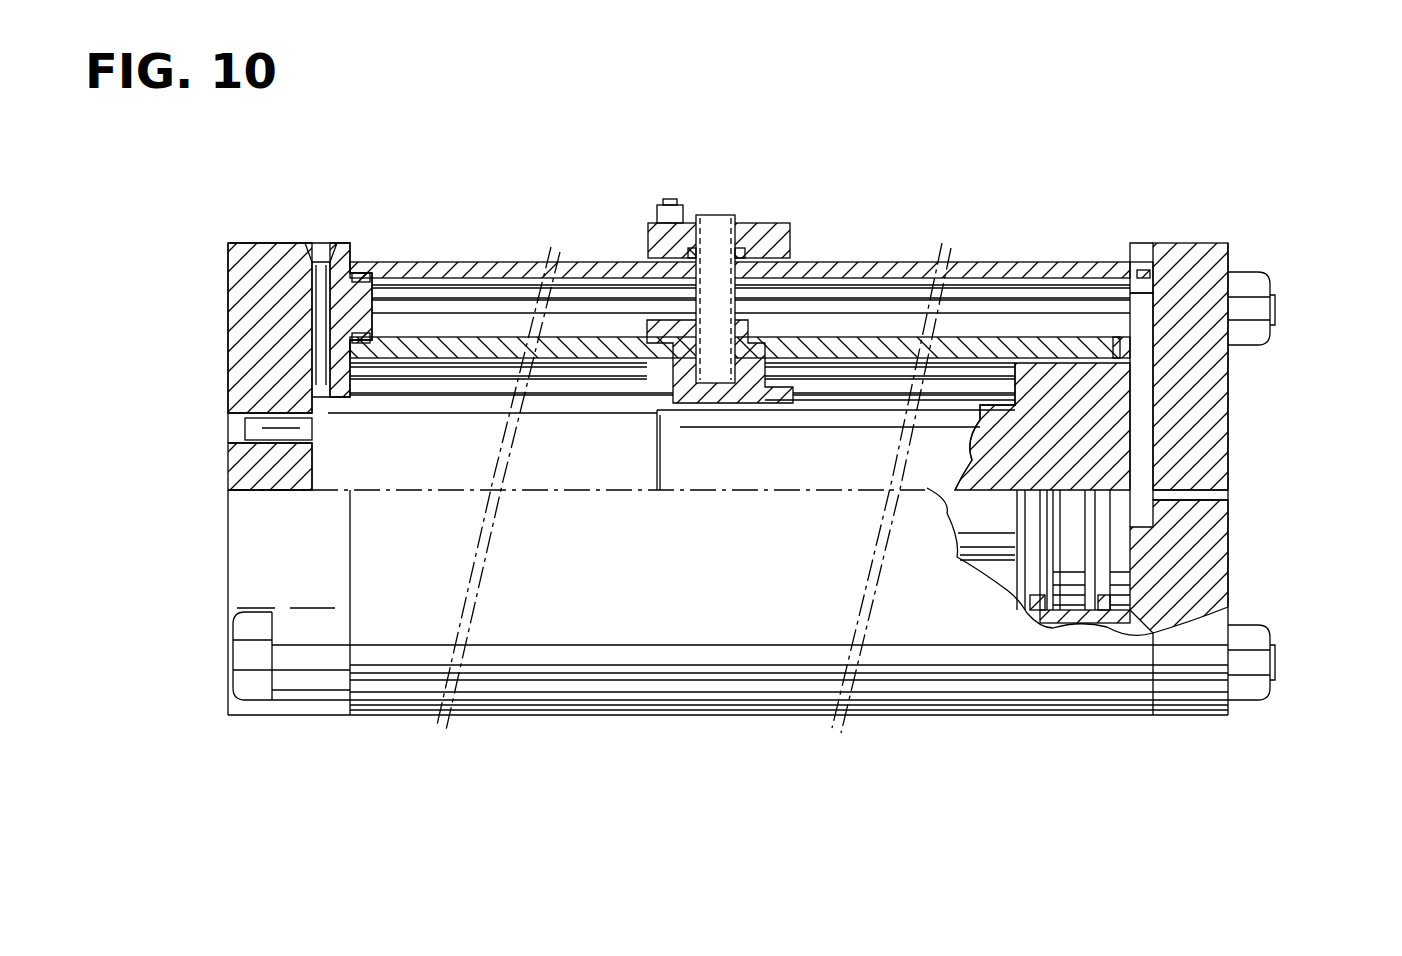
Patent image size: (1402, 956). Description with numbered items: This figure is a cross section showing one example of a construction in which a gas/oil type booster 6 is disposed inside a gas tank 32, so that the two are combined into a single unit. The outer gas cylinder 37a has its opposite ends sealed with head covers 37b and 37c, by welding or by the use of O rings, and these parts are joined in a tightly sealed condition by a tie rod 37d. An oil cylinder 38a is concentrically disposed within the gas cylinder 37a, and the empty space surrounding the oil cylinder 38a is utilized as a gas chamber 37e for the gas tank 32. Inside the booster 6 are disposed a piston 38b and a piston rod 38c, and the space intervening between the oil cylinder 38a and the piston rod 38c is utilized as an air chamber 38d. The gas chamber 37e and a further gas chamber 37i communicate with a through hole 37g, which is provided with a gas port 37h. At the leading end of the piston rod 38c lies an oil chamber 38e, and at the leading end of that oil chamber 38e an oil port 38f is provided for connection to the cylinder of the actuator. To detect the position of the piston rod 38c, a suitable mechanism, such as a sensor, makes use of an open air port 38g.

The gas/oil type booster 6 is at (1030, 322).
The gas tank 32 is at (901, 248).
The gas cylinder 37a is at (603, 258).
The head cover 37b is at (240, 300).
The head cover 37c is at (1112, 445).
The tie rod 37d is at (1070, 682).
The gas chamber 37e is at (1002, 276).
The through hole 37g is at (1132, 333).
The gas port 37h is at (1222, 495).
The gas chamber 37i is at (1160, 527).
The oil cylinder 38a is at (840, 322).
The piston 38b is at (1112, 388).
The piston rod 38c is at (745, 482).
The air chamber 38d is at (878, 395).
The oil chamber 38e is at (578, 482).
The oil port 38f is at (233, 437).
The open air port 38g is at (712, 215).